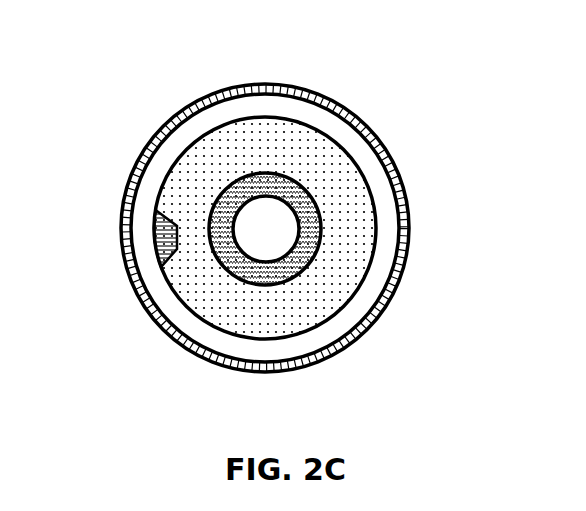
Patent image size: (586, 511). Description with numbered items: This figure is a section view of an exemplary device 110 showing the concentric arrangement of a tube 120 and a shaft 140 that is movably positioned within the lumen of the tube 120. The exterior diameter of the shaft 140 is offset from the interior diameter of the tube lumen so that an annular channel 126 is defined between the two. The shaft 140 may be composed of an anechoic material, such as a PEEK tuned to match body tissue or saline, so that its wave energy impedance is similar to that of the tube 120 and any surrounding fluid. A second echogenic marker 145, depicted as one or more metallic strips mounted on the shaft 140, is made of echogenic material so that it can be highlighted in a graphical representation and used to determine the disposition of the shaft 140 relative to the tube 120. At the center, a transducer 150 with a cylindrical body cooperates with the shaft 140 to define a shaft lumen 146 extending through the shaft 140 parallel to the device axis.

The cosmetic container assembly 110 is at (130, 110).
The tube 120 is at (408, 251).
The annular channel 126 is at (381, 190).
The shaft 140 is at (310, 160).
The second echogenic marker 145 is at (150, 240).
The transducer 150 is at (297, 263).
The shaft lumen 146 is at (272, 250).